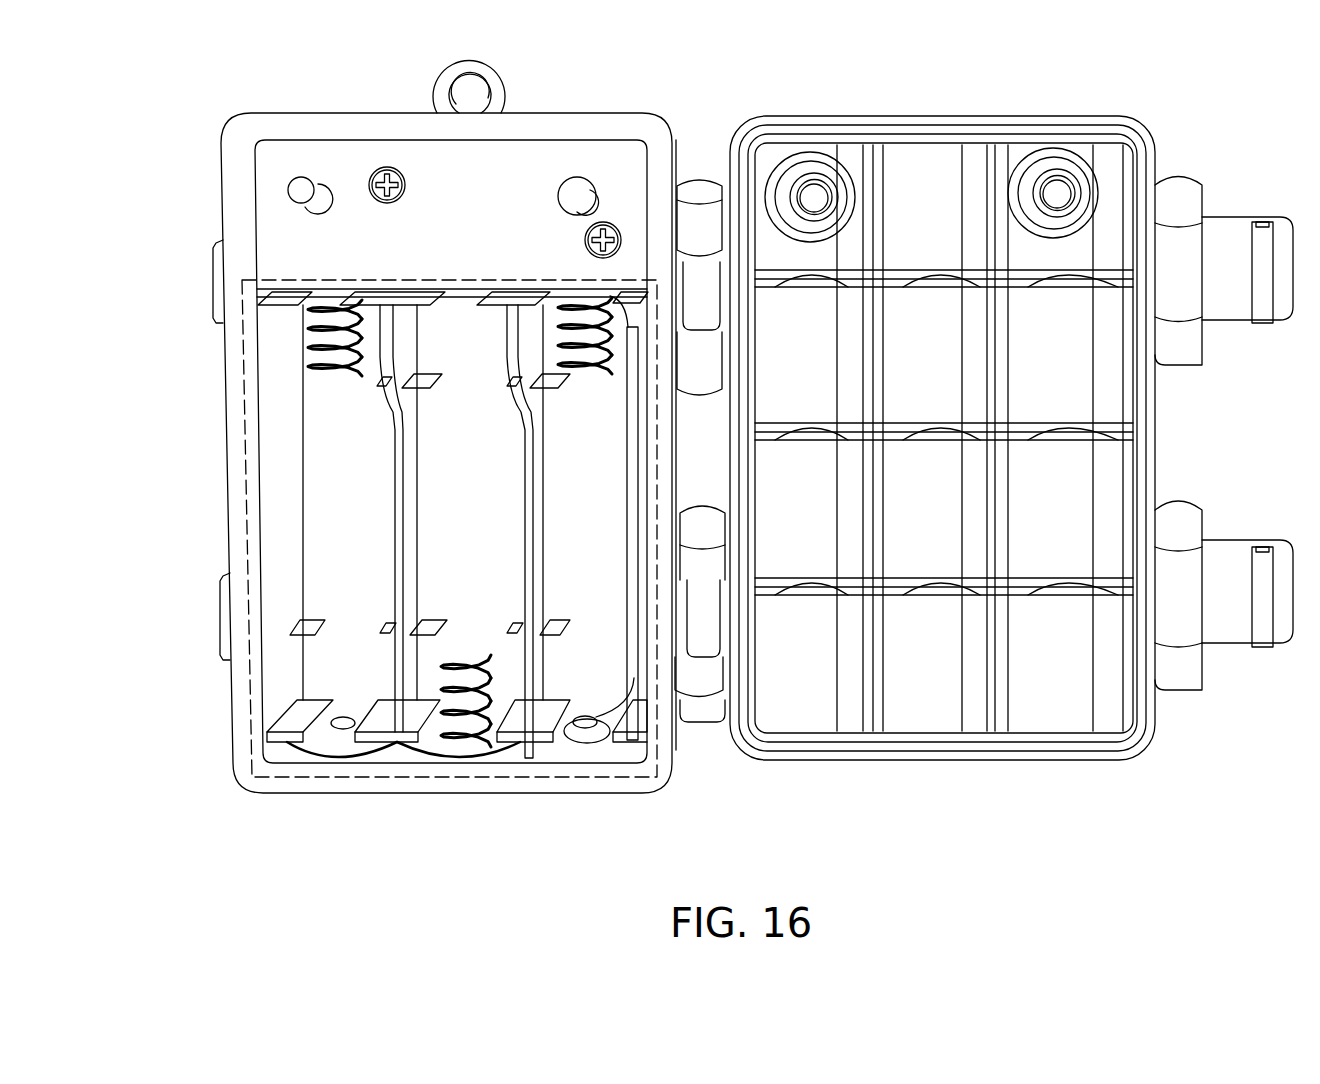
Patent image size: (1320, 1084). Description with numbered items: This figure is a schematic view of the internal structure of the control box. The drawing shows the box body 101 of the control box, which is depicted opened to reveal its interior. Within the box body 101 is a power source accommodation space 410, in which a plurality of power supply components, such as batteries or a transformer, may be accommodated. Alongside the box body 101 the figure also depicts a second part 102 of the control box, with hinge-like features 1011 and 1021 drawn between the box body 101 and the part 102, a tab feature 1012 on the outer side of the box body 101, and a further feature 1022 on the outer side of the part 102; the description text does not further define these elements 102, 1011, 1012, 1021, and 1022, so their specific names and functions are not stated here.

The box body 101 is at (530, 168).
The second housing (cover body) 102 is at (1050, 125).
The hinge knuckle of first housing 1011 is at (693, 237).
The latching tab of first housing 1012 is at (218, 282).
The hinge knuckle of second housing 1021 is at (705, 297).
The latching buckle of second housing 1022 is at (1235, 235).
The power source accommodation space 410 is at (247, 446).